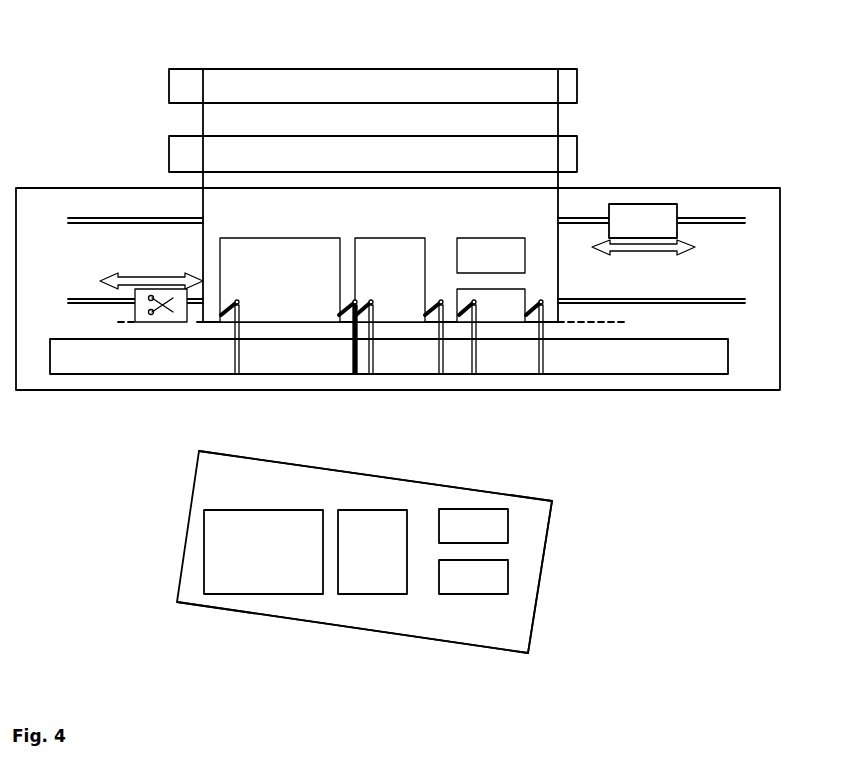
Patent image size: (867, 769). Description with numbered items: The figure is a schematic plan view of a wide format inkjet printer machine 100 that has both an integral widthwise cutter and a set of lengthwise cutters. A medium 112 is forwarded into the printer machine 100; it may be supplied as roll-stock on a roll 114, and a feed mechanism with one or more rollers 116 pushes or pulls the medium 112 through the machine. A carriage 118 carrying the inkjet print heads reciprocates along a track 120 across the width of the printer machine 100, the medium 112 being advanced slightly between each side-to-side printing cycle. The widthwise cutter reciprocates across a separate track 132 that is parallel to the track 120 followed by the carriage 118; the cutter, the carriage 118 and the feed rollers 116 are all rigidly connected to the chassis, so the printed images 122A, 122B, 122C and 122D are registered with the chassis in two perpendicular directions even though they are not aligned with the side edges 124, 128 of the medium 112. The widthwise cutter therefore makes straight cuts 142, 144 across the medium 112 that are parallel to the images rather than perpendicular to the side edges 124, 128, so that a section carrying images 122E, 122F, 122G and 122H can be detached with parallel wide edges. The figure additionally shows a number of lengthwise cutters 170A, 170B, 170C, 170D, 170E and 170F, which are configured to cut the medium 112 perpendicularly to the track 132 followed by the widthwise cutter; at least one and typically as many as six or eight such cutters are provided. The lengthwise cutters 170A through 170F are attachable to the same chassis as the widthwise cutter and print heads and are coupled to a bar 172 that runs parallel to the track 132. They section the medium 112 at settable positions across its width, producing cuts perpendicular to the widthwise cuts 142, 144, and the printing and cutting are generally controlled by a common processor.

The printer machine 100 is at (673, 420).
The medium 112 is at (453, 218).
The roll 114 is at (425, 68).
The rollers 116 is at (578, 170).
The carriage 118 is at (644, 203).
The track 120 is at (712, 222).
The printed image 122A is at (296, 287).
The printed image 122B is at (414, 269).
The printed image 122C is at (515, 269).
The printed image 122D is at (516, 321).
The printed image 122E is at (265, 558).
The printed image 122F is at (399, 558).
The printed image 122G is at (504, 540).
The printed image 122H is at (504, 591).
The side edge of medium 124 is at (180, 527).
The side edge of medium 128 is at (562, 600).
The track 132 is at (712, 305).
The cut 142 is at (540, 485).
The cut 144 is at (267, 628).
The lengthwise cutter 170A is at (237, 362).
The lengthwise cutter 170B is at (355, 362).
The lengthwise cutter 170C is at (373, 362).
The lengthwise cutter 170D is at (443, 362).
The lengthwise cutter 170E is at (476, 362).
The lengthwise cutter 170F is at (543, 362).
The bar 172 is at (707, 373).